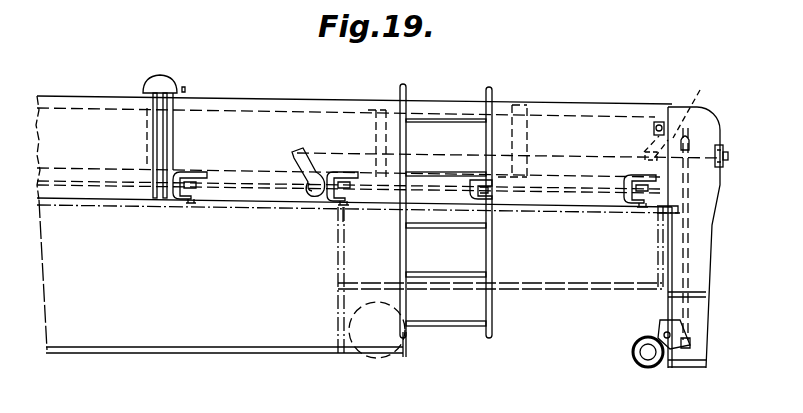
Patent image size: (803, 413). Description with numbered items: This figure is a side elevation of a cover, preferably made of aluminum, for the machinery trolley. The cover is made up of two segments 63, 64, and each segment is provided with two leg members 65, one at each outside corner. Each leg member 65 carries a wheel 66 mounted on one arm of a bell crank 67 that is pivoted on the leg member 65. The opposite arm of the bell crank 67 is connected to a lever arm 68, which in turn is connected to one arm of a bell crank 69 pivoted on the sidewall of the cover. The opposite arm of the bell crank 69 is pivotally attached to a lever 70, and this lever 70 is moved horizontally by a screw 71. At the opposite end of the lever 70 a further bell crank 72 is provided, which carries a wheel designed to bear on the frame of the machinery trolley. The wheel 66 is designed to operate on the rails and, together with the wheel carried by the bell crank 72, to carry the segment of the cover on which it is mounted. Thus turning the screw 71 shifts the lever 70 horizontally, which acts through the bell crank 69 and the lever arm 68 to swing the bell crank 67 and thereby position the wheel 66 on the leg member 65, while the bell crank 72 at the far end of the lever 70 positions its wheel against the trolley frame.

The cover segment 63 is at (562, 102).
The cover segment 64 is at (102, 95).
The leg member 65 is at (709, 250).
The wheel 66 is at (633, 352).
The bell crank 67 is at (660, 333).
The lever arm 68 is at (687, 223).
The bell crank 69 is at (694, 98).
The lever 70 is at (548, 157).
The screw 71 is at (717, 129).
The bell crank 72 is at (296, 154).